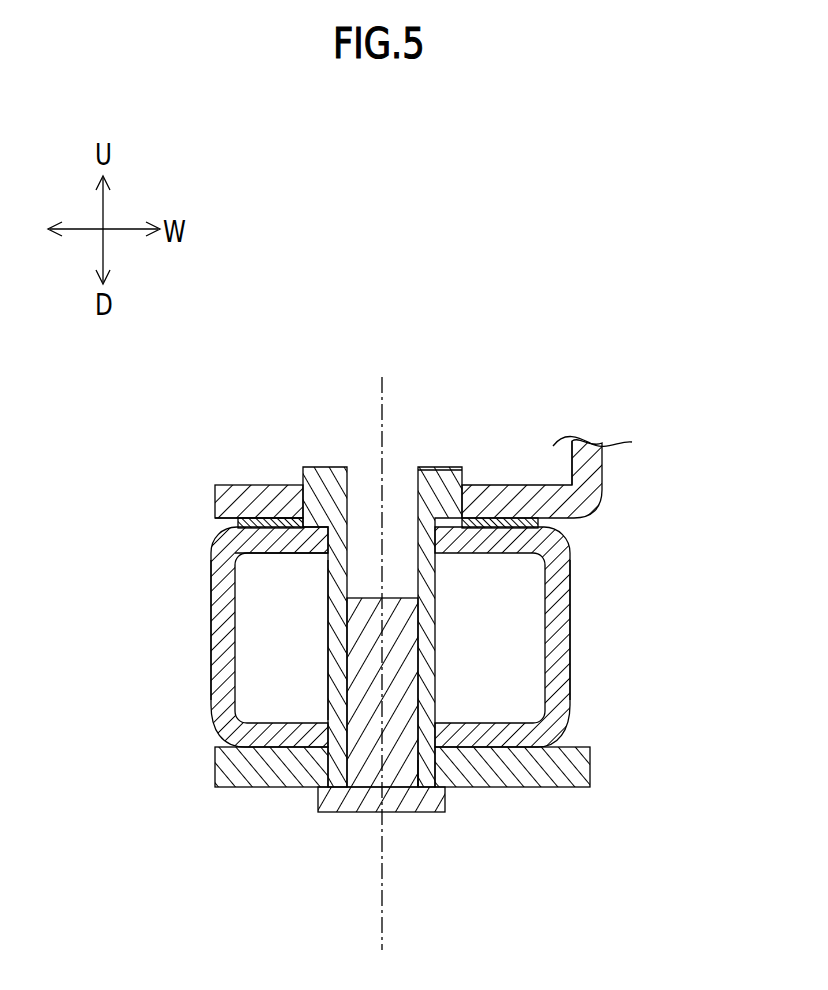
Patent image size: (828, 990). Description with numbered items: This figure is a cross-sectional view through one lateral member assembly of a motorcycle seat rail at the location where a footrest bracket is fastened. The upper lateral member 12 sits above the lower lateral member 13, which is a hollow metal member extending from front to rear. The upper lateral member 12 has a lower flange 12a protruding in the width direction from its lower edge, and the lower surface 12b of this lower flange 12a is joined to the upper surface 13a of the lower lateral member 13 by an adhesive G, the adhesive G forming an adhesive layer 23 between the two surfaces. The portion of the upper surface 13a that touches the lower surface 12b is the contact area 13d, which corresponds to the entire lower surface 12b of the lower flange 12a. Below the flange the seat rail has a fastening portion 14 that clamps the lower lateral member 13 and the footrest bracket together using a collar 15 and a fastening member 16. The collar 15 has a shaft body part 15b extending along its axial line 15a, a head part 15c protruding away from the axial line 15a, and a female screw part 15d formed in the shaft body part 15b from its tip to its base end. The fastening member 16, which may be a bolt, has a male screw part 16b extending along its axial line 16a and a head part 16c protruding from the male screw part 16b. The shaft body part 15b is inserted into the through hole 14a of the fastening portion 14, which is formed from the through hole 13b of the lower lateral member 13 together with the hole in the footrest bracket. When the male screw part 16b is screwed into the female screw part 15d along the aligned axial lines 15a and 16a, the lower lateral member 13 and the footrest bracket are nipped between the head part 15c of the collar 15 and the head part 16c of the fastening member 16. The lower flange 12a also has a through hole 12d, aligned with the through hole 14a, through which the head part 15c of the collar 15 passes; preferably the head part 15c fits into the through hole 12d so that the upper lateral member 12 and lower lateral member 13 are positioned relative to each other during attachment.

The upper lateral member 12 is at (602, 442).
The lower flange 12a is at (520, 498).
The lower surface 12b is at (238, 523).
The through hole 12d is at (302, 472).
The lower lateral member 13 is at (563, 645).
The upper surface 13a is at (547, 542).
The through hole 13b is at (332, 562).
The contact area 13d is at (240, 557).
The fastening portion 14 is at (432, 464).
The through hole 14a is at (400, 772).
The collar 15 is at (318, 466).
The axial line 15a is at (381, 447).
The shaft body part 15b is at (332, 668).
The head part 15c is at (452, 468).
The female screw part 15d is at (332, 600).
The fastening member 16 is at (446, 769).
The axial line 16a is at (385, 863).
The male screw part 16b is at (400, 690).
The head part 16c is at (343, 810).
The adhesive layer 23 is at (238, 527).
The adhesive G is at (538, 527).